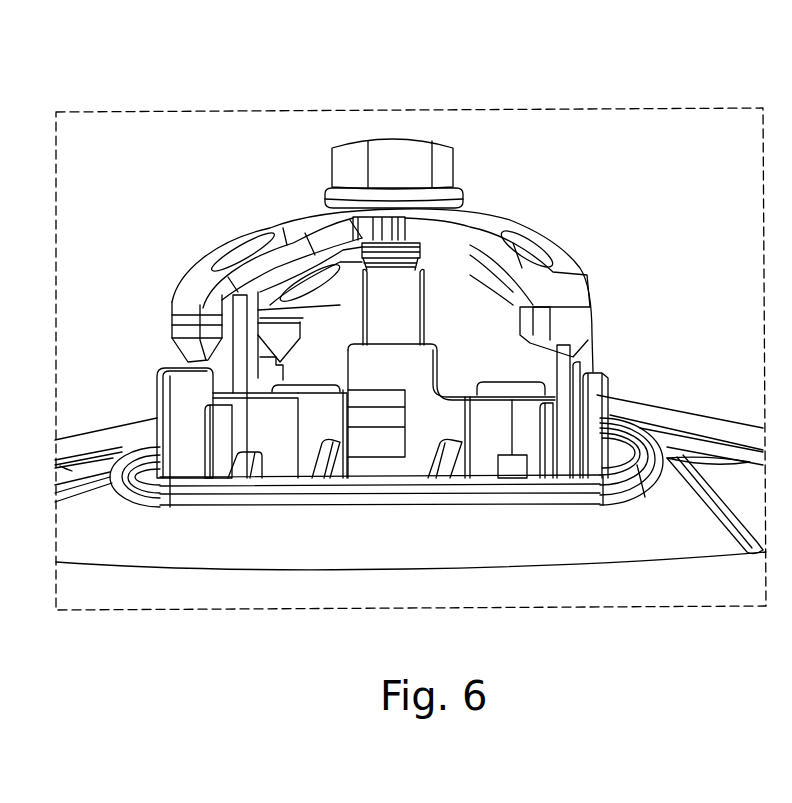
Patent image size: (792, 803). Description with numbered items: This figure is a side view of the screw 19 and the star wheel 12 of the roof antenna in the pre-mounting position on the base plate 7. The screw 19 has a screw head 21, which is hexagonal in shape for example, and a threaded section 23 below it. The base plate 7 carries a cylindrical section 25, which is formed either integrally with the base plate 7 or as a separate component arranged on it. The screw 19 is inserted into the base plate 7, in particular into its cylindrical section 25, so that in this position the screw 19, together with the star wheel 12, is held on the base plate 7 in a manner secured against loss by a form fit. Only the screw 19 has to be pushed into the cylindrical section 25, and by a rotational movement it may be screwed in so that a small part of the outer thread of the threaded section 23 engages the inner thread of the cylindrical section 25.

The base plate 7 is at (682, 398).
The star wheel 12 is at (548, 241).
The screw 19 is at (451, 114).
The screw head 21 is at (404, 157).
The threaded section 23 is at (411, 313).
The cylindrical section 25 is at (420, 373).